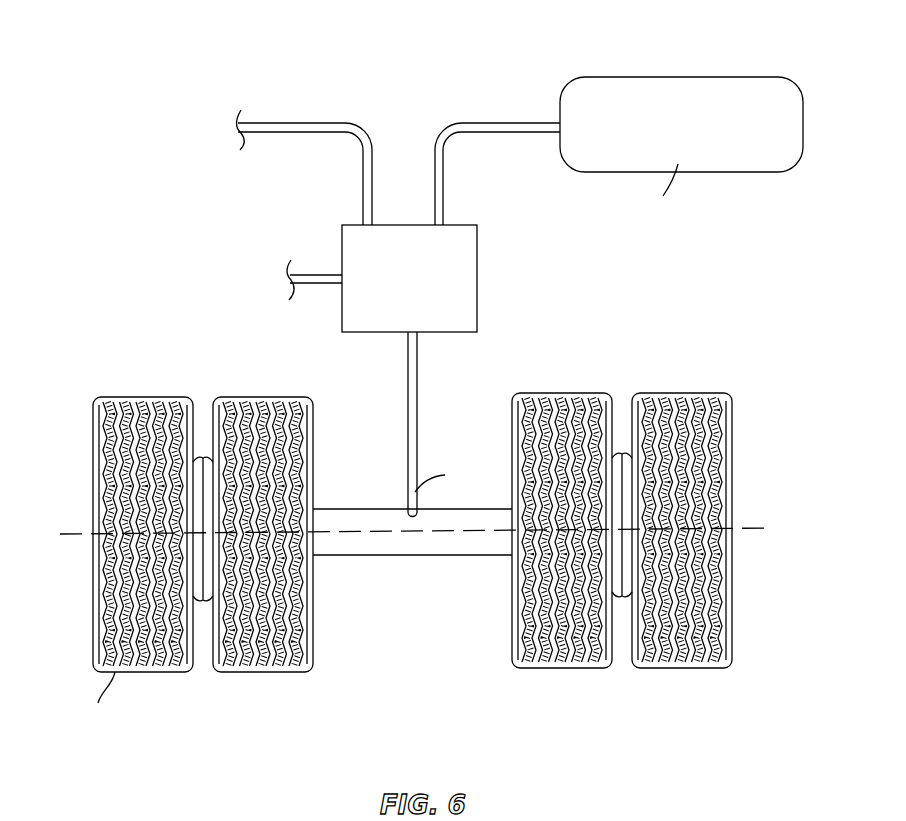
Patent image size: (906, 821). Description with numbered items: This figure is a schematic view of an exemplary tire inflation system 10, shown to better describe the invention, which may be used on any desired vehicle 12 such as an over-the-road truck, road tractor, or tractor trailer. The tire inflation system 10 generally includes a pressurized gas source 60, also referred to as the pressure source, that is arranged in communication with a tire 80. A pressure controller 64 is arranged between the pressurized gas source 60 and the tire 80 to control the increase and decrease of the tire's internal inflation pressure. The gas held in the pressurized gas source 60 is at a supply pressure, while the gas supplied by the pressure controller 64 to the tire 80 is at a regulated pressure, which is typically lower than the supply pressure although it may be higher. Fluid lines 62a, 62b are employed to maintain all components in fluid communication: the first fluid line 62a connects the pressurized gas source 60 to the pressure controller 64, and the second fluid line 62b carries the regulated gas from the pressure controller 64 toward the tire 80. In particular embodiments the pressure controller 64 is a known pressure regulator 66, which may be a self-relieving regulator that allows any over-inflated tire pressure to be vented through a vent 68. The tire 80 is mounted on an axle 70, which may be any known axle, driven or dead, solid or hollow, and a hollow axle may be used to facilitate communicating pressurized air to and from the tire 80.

The tire inflation system 10 is at (258, 50).
The vehicle 12 is at (734, 269).
The pressurized gas source 60 is at (721, 77).
The fluid line 62a is at (497, 122).
The fluid line 62b is at (414, 383).
The pressure controller 64 is at (500, 227).
The pressure regulator 66 is at (472, 308).
The vent 68 is at (317, 280).
The axle 70 is at (357, 550).
The tire 80 is at (253, 398).